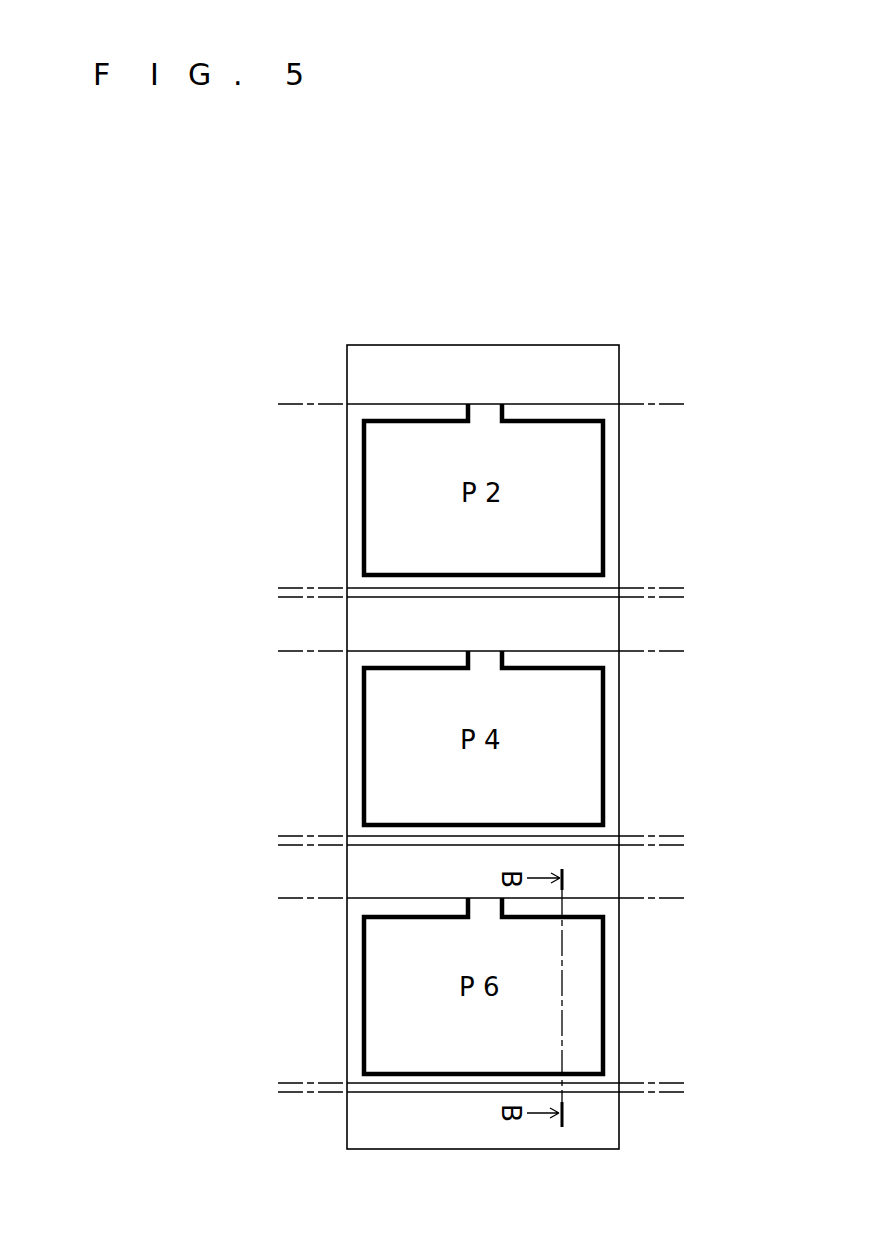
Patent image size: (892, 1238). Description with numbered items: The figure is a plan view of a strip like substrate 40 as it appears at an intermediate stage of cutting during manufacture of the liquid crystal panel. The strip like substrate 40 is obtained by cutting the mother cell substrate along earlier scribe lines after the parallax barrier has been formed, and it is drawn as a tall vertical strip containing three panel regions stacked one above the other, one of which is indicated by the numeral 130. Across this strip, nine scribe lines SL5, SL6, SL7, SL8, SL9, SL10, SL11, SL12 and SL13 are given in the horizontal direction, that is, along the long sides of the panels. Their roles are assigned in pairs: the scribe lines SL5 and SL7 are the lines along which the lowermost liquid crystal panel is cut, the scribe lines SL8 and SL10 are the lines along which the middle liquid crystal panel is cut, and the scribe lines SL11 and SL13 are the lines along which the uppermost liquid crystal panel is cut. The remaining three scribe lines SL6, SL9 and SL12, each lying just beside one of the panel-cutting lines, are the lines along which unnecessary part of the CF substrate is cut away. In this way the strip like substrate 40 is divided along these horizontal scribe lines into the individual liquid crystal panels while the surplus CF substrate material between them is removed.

The strip like substrate 40 is at (622, 367).
The display panel region 130 is at (605, 503).
The scribe line SL13 is at (512, 404).
The scribe line SL12 is at (512, 586).
The scribe line SL11 is at (512, 607).
The scribe line SL10 is at (512, 653).
The scribe line SL9 is at (506, 828).
The scribe line SL8 is at (506, 852).
The scribe line SL7 is at (506, 900).
The scribe line SL6 is at (506, 1077).
The scribe line SL5 is at (506, 1100).